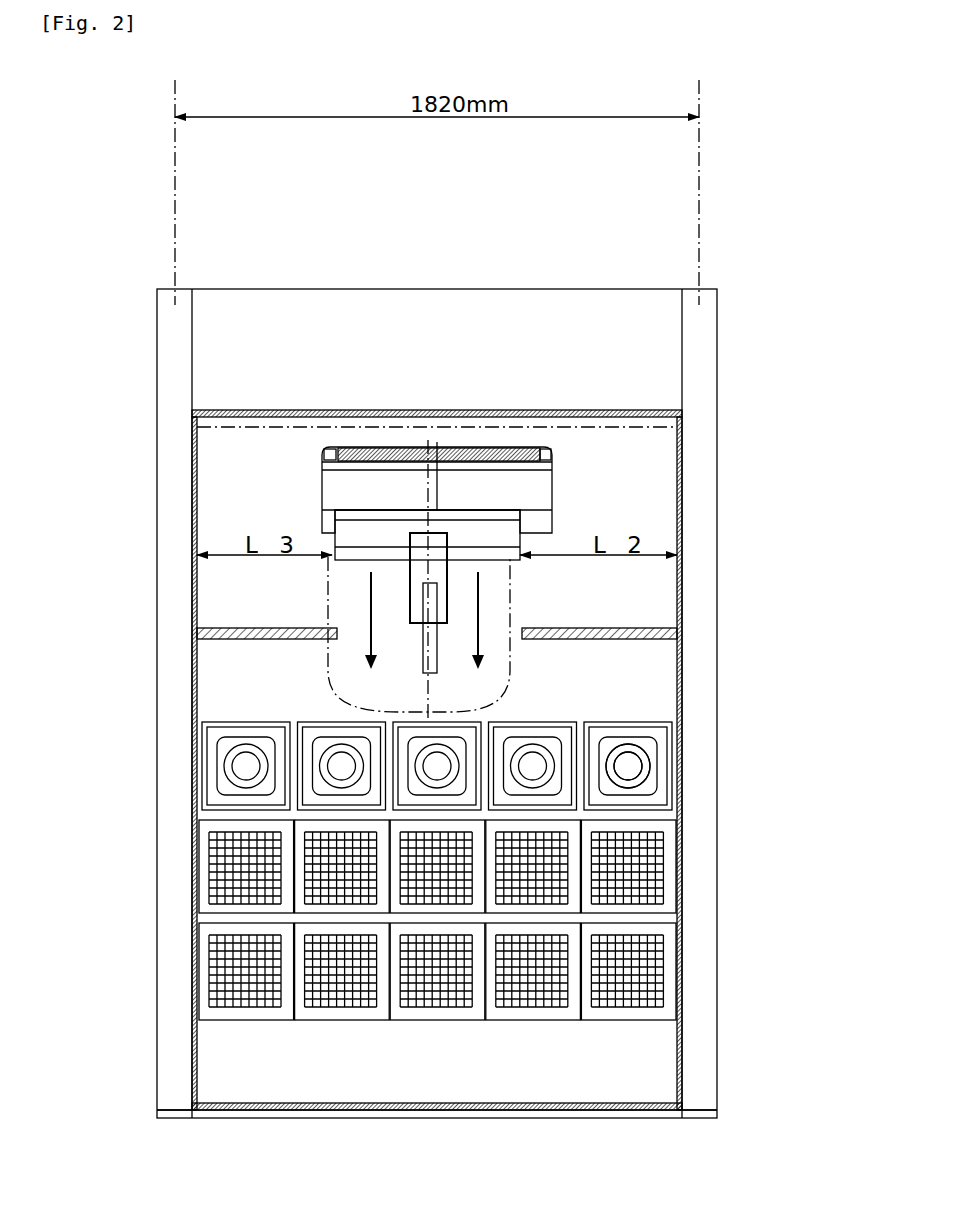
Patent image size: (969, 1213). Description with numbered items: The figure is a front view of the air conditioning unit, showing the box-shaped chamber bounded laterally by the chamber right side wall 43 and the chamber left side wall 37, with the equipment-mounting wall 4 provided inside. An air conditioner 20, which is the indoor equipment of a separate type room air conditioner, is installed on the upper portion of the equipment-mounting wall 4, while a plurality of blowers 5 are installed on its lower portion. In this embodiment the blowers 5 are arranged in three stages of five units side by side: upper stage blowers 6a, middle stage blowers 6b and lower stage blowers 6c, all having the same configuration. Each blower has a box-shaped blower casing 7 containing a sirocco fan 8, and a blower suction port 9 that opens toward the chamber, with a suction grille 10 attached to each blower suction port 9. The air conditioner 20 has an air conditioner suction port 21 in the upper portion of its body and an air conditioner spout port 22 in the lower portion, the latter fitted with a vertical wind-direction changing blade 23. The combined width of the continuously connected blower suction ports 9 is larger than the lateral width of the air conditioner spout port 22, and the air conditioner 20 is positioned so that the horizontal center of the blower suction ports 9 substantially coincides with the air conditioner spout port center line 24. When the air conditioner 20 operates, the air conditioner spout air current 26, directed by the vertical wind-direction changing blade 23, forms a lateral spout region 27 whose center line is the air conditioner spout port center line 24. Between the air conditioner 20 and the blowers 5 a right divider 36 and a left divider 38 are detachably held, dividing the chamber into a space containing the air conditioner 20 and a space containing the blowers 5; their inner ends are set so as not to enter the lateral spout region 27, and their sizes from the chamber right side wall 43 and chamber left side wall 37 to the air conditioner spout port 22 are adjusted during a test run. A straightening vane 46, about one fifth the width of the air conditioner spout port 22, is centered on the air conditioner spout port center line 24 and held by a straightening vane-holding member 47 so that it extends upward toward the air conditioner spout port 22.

The equipment-mounting wall 4 is at (580, 437).
The blowers 5 is at (528, 800).
The upper stage blowers 6a is at (691, 695).
The middle stage blowers 6b is at (640, 870).
The lower stage blowers 6c is at (688, 920).
The blower casing 7 is at (627, 722).
The sirocco fan 8 is at (652, 745).
The blower suction port 9 is at (640, 757).
The suction grille 10 is at (652, 1017).
The air conditioner 20 is at (325, 500).
The air conditioner suction port 21 is at (348, 445).
The air conditioner spout port 22 is at (330, 533).
The vertical wind-direction changing blade 23 is at (340, 550).
The air conditioner spout port center line 24 is at (420, 433).
The air conditioner spout air current 26 is at (371, 640).
The lateral spout region 27 is at (495, 633).
The right divider 36 is at (598, 628).
The chamber left side wall 37 is at (187, 1087).
The left divider 38 is at (287, 630).
The chamber right side wall 43 is at (675, 1080).
The straightening vane 46 is at (423, 583).
The straightening vane-holding member 47 is at (400, 695).